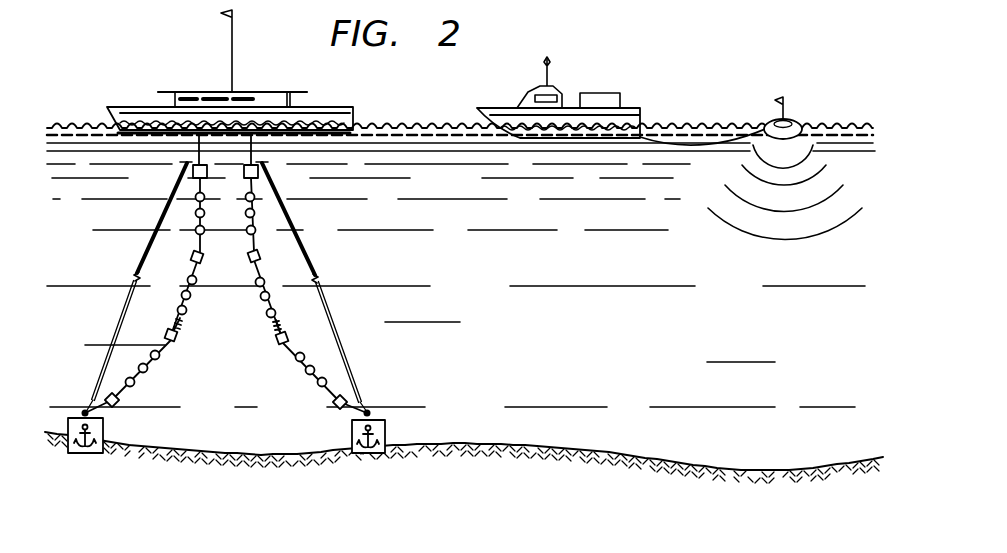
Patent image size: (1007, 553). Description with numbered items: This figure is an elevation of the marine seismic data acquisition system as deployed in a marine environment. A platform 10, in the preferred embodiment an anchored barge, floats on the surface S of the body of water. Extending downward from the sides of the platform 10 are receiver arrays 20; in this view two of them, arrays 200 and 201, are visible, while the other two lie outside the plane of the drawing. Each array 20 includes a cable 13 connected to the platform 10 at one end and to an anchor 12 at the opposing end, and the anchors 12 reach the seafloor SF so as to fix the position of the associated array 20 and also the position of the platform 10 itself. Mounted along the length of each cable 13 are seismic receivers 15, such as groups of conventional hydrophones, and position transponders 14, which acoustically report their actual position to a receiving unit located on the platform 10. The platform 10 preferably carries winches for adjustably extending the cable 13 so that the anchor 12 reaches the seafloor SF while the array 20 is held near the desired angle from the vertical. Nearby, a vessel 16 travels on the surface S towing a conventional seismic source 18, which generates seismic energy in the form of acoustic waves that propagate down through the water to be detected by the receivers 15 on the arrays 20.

The platform 10 is at (176, 92).
The anchor 12 is at (86, 460).
The cable 13 is at (199, 268).
The position transponder 14 is at (178, 340).
The seismic receiver 15 is at (143, 373).
The vessel 16 is at (610, 93).
The seismic source 18 is at (796, 118).
The receiver array 20 is at (226, 287).
The first receiver array 200 is at (136, 276).
The second receiver array 201 is at (316, 279).
The surface S is at (415, 125).
The seafloor SF is at (235, 452).